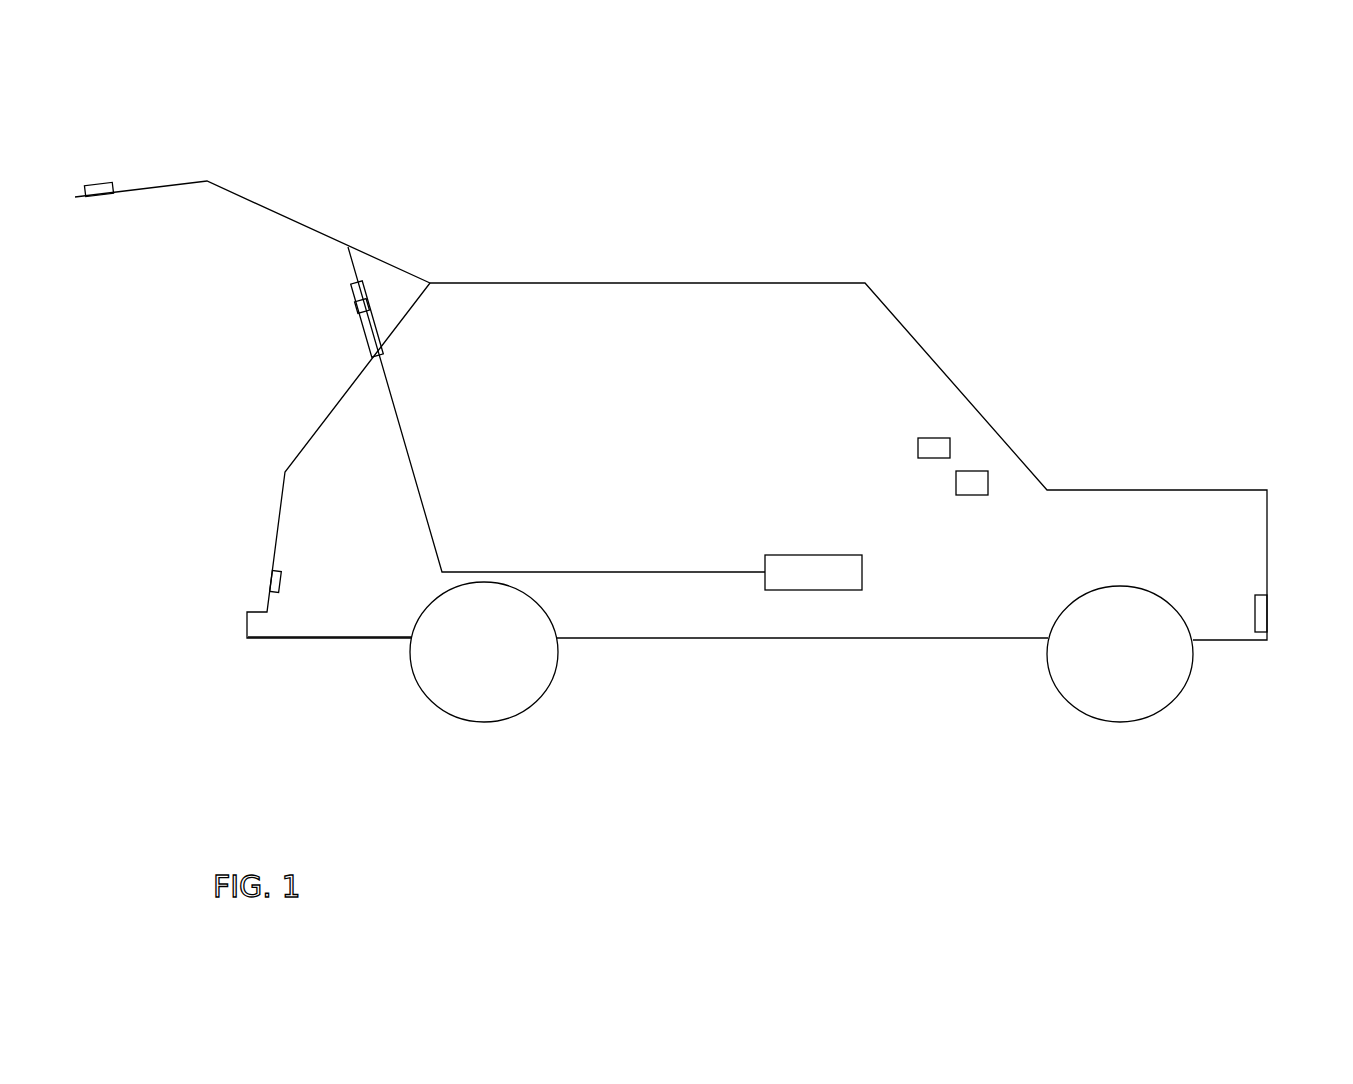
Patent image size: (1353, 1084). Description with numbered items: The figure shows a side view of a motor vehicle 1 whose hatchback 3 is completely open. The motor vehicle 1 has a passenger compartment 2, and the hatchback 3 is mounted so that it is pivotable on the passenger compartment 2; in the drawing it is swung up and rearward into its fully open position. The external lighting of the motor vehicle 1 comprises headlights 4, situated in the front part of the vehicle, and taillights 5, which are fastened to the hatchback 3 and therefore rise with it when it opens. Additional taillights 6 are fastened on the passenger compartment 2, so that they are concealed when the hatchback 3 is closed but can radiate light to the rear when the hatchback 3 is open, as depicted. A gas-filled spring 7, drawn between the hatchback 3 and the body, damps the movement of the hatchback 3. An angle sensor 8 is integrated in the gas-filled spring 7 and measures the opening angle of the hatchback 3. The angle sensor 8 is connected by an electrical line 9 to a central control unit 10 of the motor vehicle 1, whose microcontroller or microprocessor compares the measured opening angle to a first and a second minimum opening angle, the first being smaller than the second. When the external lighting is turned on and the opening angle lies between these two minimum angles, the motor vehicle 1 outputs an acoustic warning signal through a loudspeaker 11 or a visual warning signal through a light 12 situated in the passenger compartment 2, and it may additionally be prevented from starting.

The motor vehicle 1 is at (1002, 292).
The passenger compartment 2 is at (323, 600).
The hatchback 3 is at (260, 203).
The headlights 4 is at (1261, 612).
The taillights 5 is at (92, 184).
The additional taillights 6 is at (270, 578).
The gas-filled spring 7 is at (373, 347).
The angle sensor 8 is at (360, 306).
The electrical line 9 is at (408, 461).
The central control unit 10 is at (811, 575).
The loudspeaker 11 is at (938, 448).
The light 12 is at (972, 478).